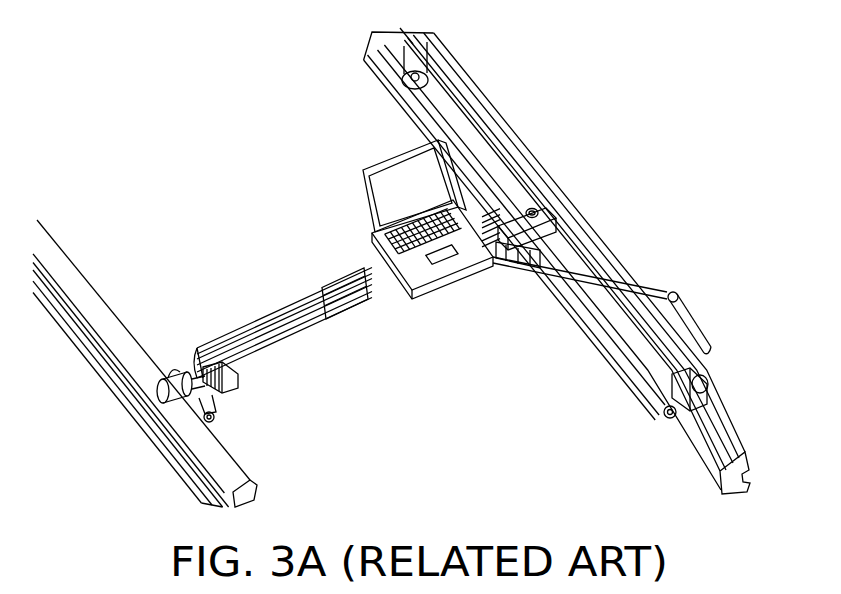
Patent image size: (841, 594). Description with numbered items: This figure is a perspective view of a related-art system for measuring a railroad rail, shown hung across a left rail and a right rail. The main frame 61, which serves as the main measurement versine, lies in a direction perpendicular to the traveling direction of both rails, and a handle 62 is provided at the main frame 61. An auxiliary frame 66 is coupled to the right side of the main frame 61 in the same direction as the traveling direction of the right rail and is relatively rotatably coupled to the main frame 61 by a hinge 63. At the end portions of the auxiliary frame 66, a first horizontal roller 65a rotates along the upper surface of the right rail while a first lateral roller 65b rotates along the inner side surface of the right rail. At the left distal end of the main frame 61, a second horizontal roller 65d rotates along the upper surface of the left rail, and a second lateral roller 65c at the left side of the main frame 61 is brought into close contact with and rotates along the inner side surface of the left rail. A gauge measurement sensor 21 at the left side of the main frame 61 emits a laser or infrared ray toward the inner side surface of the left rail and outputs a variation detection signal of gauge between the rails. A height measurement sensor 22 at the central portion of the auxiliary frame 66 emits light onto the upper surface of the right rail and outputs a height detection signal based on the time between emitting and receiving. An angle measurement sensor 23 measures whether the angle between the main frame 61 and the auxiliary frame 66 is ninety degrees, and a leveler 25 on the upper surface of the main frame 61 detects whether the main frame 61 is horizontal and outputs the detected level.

The gauge measurement sensor 21 is at (224, 390).
The height measurement sensor 22 is at (571, 201).
The angle measurement sensor 23 is at (522, 258).
The leveler 25 is at (332, 288).
The main frame 61 is at (330, 328).
The handle 62 is at (700, 319).
The hinge 63 is at (538, 207).
The first horizontal roller 65a is at (705, 394).
The first lateral roller 65b is at (665, 418).
The second lateral roller 65c is at (215, 419).
The second horizontal roller 65d is at (152, 378).
The auxiliary frame 66 is at (528, 157).